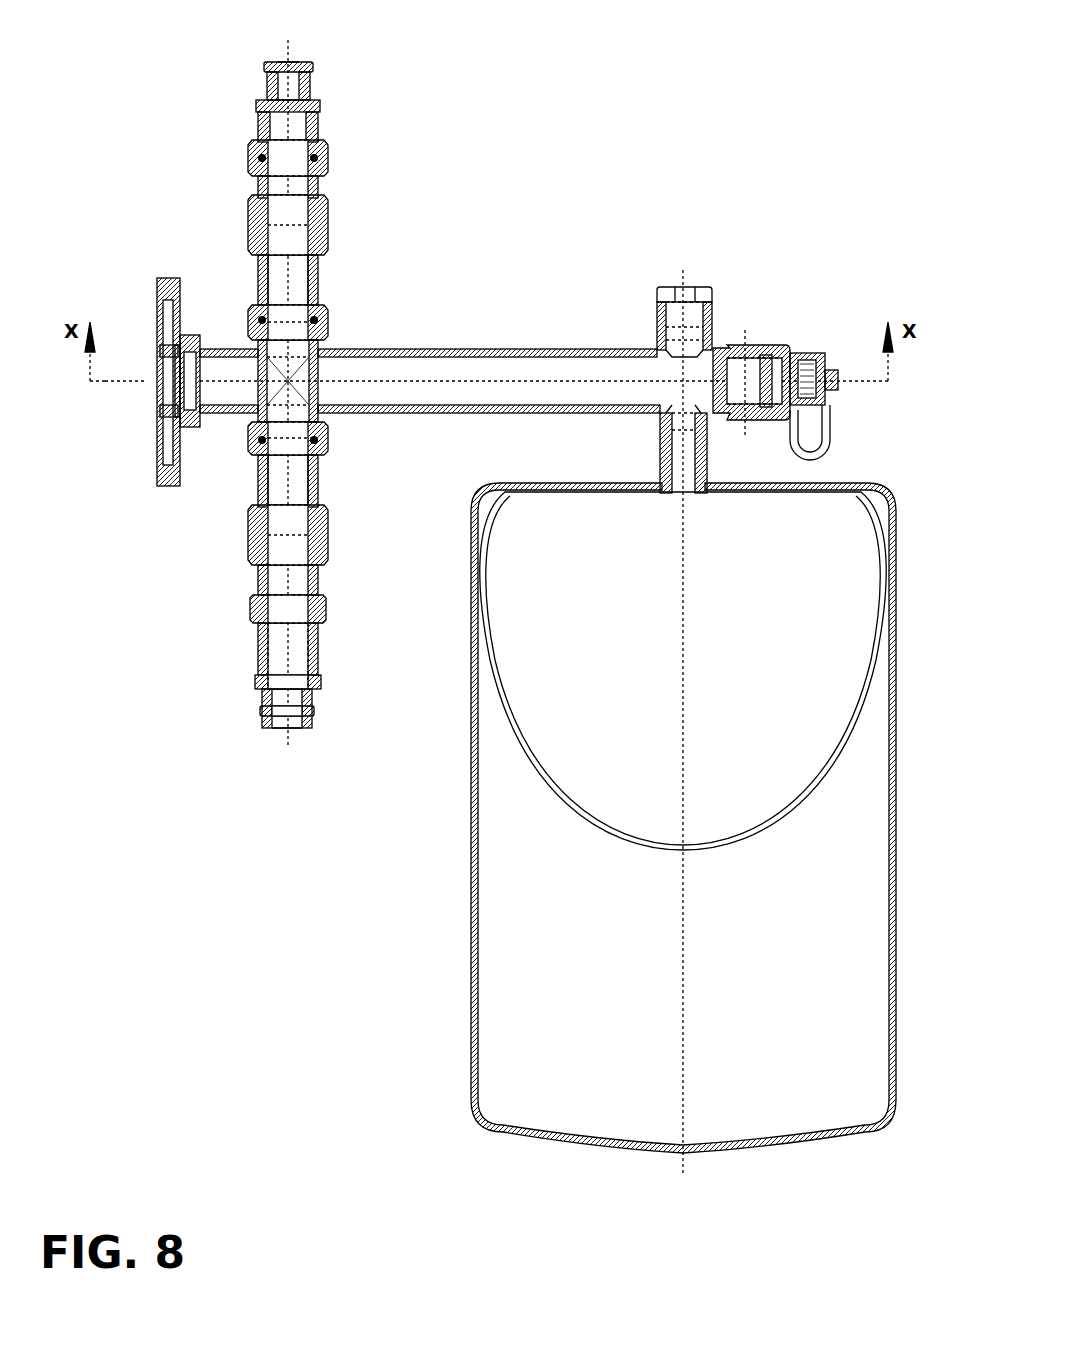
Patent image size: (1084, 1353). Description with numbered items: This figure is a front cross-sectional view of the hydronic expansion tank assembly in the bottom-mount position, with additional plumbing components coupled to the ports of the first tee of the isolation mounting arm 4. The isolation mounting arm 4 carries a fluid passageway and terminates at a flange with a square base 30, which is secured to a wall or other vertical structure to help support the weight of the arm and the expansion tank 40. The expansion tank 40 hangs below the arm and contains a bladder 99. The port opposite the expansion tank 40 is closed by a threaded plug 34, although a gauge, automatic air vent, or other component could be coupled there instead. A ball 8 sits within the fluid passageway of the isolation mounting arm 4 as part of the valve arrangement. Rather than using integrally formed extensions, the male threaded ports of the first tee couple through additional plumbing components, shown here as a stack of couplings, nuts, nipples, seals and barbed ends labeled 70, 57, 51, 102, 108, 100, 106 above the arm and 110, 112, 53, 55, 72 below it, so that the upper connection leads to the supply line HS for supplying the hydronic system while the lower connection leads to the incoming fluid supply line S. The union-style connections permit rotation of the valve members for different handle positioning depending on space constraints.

The isolation mounting arm 4 is at (472, 343).
The square base 30 is at (157, 290).
The supply line for the hydronic system HS is at (265, 73).
The upper pipe nipple 70 is at (318, 122).
The upper nut 57 is at (254, 185).
The upper coupling 51 is at (318, 217).
The nut body 102 is at (258, 303).
The seal ring 108 is at (274, 262).
The compression nut 100 is at (276, 262).
The ferrule 106 is at (274, 262).
The lower nut body 110 is at (215, 504).
The lower seal 112 is at (257, 463).
The lower coupling 53 is at (257, 540).
The lower pipe nipple 55 is at (257, 577).
The lower hose barb 72 is at (263, 650).
The incoming fluid supply line S is at (263, 695).
The threaded plug 34 is at (660, 290).
The ball 8 is at (735, 348).
The expansion tank 40 is at (540, 955).
The bladder 99 is at (818, 785).